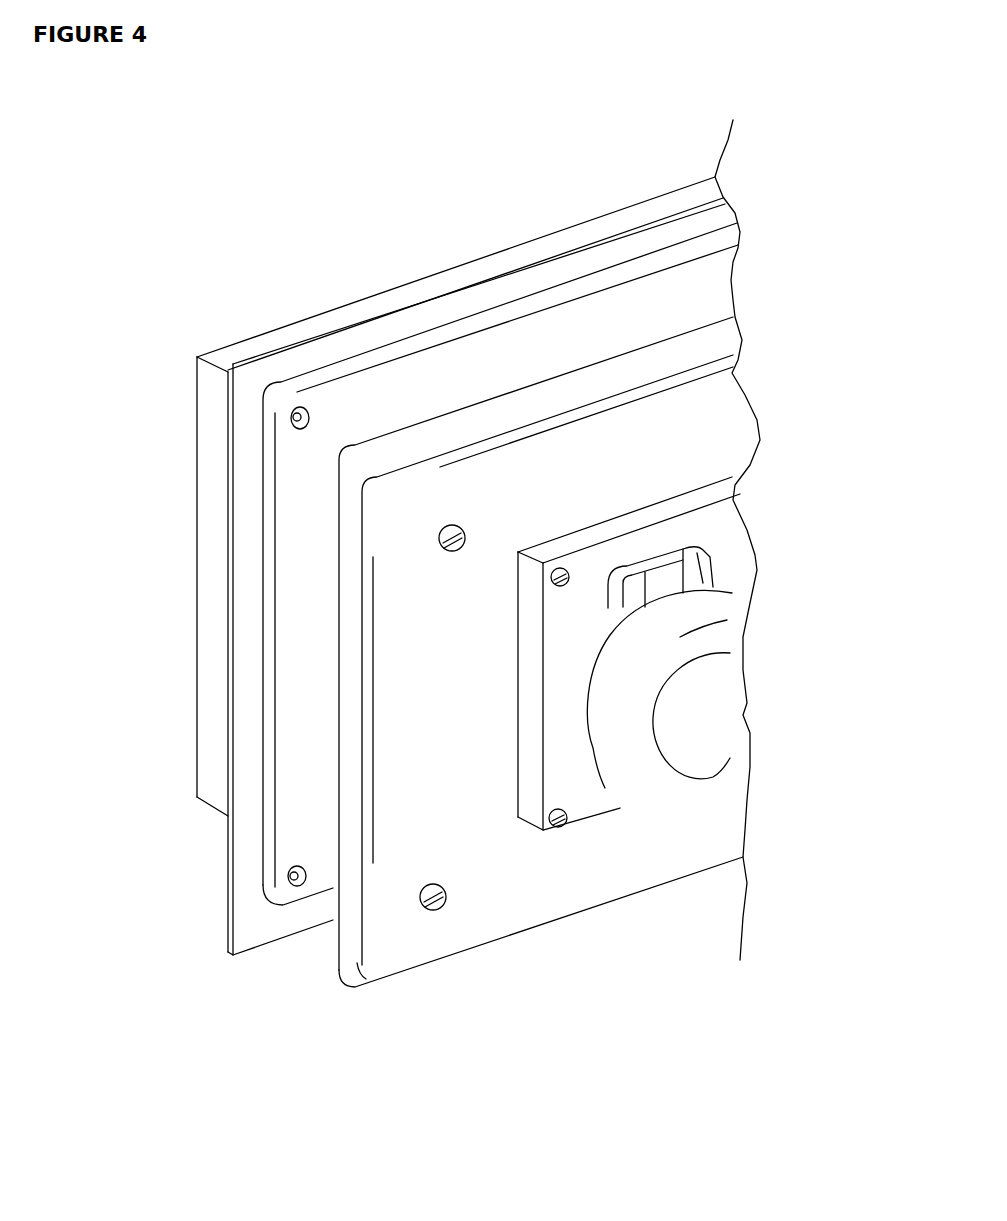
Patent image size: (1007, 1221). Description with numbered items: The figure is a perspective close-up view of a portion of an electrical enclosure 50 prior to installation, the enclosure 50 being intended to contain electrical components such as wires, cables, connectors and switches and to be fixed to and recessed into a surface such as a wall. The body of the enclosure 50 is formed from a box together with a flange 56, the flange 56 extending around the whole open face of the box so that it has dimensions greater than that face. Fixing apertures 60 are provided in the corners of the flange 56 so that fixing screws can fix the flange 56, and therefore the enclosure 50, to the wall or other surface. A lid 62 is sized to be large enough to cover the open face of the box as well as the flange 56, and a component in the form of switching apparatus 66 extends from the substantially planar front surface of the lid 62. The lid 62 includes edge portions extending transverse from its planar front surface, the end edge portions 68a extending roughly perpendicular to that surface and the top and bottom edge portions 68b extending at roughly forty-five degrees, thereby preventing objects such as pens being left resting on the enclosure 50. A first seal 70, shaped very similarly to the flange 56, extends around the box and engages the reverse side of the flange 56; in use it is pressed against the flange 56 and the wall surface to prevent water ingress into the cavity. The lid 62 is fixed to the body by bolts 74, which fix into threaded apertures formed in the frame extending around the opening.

The electrical enclosure 50 is at (707, 953).
The flange 56 is at (403, 389).
The fixing apertures 60 is at (296, 415).
The lid 62 is at (403, 826).
The switching apparatus 66 is at (641, 542).
The end edge portions 68a is at (228, 797).
The top and bottom edge portions 68b is at (574, 390).
The first seal 70 is at (252, 568).
The bolts 74 is at (441, 543).